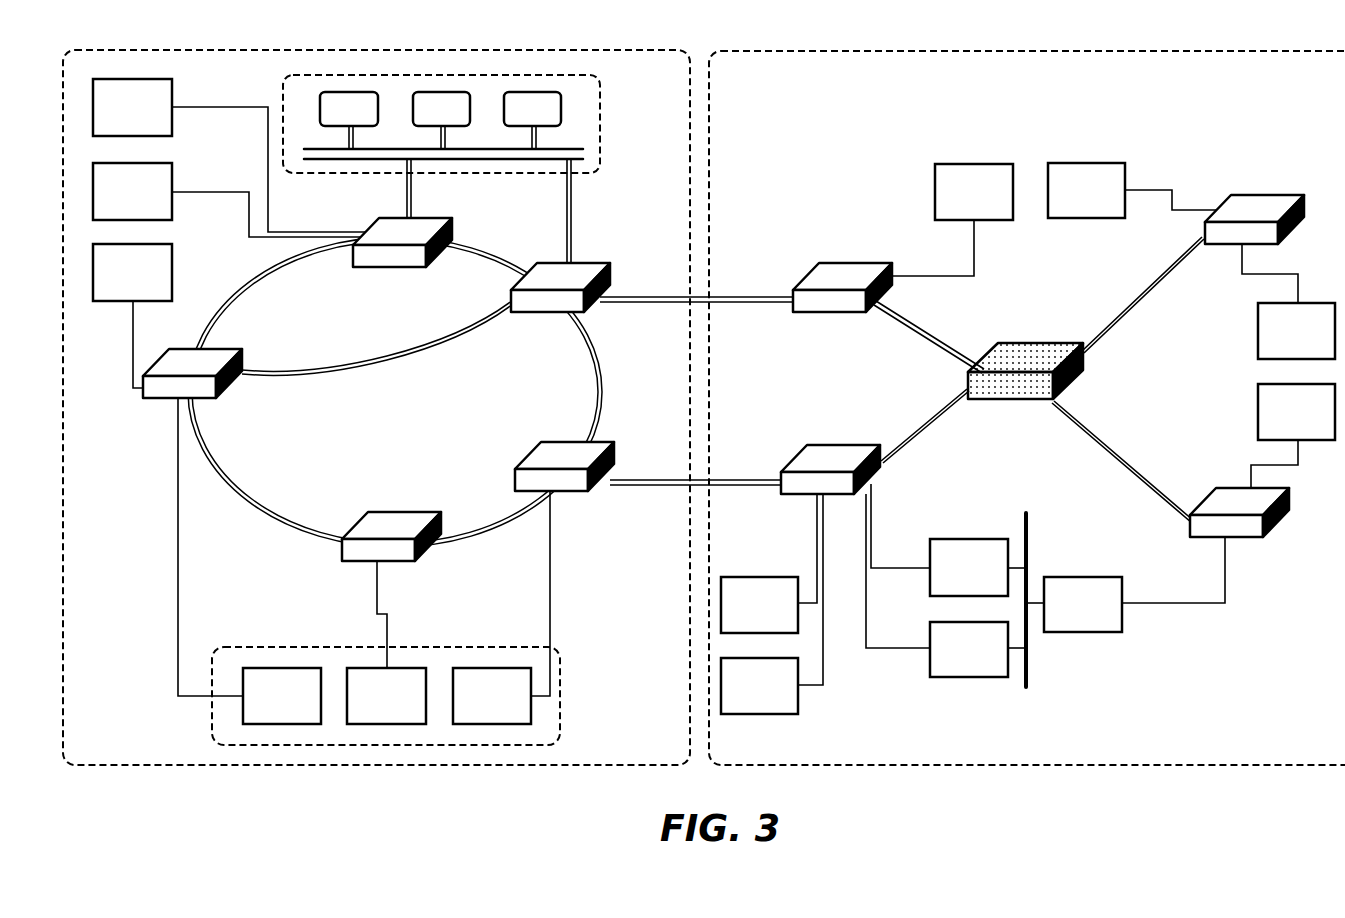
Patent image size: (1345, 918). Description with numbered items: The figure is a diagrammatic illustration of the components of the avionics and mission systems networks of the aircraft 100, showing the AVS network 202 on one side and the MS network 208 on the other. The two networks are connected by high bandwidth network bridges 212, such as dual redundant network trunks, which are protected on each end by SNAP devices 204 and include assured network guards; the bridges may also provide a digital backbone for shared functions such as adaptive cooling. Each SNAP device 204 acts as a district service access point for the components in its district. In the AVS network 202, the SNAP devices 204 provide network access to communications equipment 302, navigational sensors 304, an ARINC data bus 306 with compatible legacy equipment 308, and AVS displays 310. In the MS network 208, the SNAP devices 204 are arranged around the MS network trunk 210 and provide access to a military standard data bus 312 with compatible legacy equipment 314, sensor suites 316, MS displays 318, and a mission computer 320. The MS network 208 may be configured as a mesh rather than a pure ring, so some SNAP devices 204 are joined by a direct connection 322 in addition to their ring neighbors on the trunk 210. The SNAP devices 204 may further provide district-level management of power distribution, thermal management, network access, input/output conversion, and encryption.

The aircraft 100 is at (147, 46).
The AVS network 202 is at (1328, 742).
The SNAP device 204 is at (822, 278).
The MS network 208 is at (667, 740).
The MS network trunk 210 is at (250, 500).
The network bridge 212 is at (697, 302).
The communications equipment 302 is at (994, 207).
The navigational sensor 304 is at (1316, 346).
The ARINC 429 data bus 306 is at (1030, 667).
The legacy equipment 308 is at (989, 583).
The AVS display 310 is at (779, 620).
The MIL-STD-1553 data bus 312 is at (577, 155).
The legacy equipment 314 is at (540, 112).
The sensor suite 316 is at (302, 711).
The MS display 318 is at (152, 207).
The mission computer 320 is at (152, 123).
The direct connection 322 is at (350, 375).